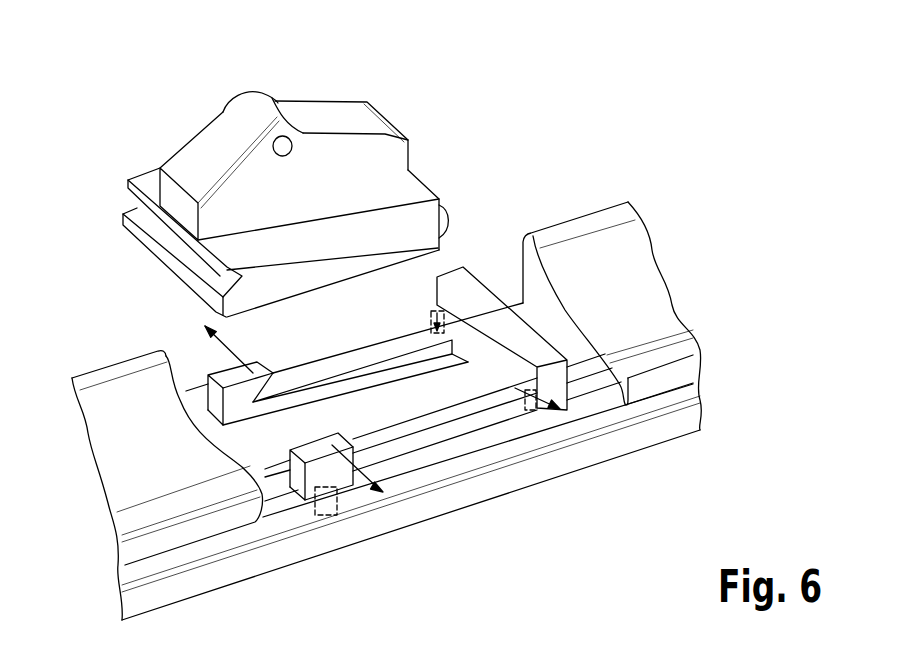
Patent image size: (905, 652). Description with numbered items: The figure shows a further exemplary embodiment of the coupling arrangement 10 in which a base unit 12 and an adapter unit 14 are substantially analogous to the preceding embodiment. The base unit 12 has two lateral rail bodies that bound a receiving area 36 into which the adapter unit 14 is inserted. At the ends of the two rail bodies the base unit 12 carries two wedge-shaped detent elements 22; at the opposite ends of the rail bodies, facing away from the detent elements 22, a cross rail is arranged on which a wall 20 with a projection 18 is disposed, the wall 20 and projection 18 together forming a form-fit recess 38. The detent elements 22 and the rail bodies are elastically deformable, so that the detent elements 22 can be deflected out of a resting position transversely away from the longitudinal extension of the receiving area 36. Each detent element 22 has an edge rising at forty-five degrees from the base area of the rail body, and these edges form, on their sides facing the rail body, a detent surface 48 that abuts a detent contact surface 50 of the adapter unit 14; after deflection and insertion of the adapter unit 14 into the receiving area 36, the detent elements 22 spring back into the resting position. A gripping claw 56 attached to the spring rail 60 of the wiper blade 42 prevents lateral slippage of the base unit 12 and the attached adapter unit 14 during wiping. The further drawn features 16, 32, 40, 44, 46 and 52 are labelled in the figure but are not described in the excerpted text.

The adapter device 10 is at (652, 142).
The base unit 12 is at (470, 445).
The adapter unit 14 is at (180, 122).
The coupling unit 16 is at (447, 222).
The projection 18 is at (487, 338).
The wall 20 is at (576, 400).
The detent elements 22 is at (225, 377).
The pin 32 is at (445, 208).
The receiving area 36 is at (423, 447).
The form-fit recess 38 is at (567, 420).
The clamping element 40 is at (647, 262).
The wiper blade 42 is at (677, 419).
The actuating plate 44 is at (312, 118).
The latching recess 46 is at (430, 315).
The detent surface 48 is at (270, 388).
The detent contact surface 50 is at (175, 242).
The hole 52 is at (282, 138).
The gripping claw 56 is at (320, 517).
The spring rail 60 is at (603, 399).